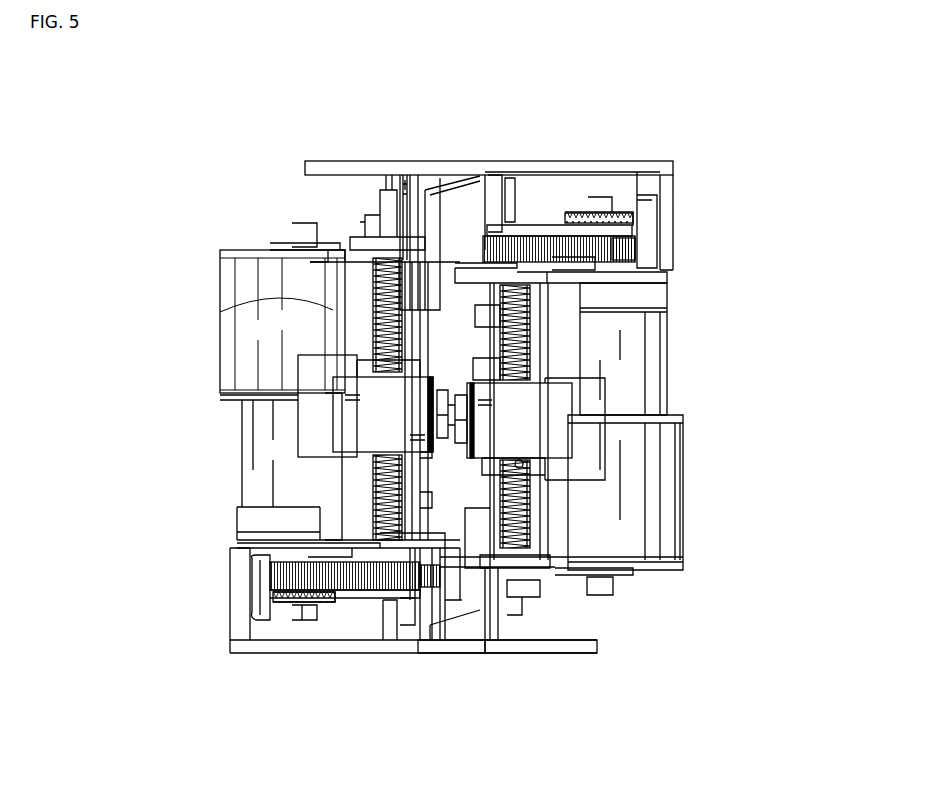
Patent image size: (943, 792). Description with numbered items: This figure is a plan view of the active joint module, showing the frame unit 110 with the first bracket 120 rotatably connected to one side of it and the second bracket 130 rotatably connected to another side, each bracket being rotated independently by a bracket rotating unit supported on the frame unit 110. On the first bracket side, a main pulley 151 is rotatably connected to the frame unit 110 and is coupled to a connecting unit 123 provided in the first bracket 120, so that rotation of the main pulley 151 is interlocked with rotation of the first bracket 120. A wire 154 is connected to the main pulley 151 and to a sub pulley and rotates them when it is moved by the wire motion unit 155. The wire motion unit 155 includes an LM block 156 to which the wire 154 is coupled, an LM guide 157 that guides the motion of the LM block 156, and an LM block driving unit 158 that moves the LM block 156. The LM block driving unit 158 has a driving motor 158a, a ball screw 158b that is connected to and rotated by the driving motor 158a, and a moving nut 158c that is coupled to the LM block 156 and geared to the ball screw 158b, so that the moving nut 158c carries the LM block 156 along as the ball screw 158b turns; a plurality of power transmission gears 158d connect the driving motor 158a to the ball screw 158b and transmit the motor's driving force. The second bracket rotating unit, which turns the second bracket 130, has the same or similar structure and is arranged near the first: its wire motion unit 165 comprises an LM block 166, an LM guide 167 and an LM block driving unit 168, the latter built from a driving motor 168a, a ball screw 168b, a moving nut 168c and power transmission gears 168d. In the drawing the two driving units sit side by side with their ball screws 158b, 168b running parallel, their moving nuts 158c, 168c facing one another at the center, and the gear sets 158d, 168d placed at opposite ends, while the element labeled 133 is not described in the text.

The frame unit 110 is at (462, 603).
The first bracket 120 is at (532, 167).
The connecting unit 123 is at (430, 180).
The second bracket 130 is at (533, 647).
The support block 133 is at (477, 615).
The main pulley 151 is at (407, 182).
The wire 154 is at (392, 190).
The wire motion unit 155 is at (112, 584).
The LM block 156 is at (305, 375).
The LM guide 157 is at (333, 310).
The LM block driving unit 158 is at (164, 580).
The driving motor 158a is at (262, 430).
The ball screw 158b is at (380, 492).
The moving nut 158c is at (387, 370).
The power transmission gear 158d is at (290, 575).
The wire motion unit 165 is at (792, 352).
The LM block 166 is at (557, 443).
The LM guide 167 is at (575, 520).
The LM block driving unit 168 is at (740, 300).
The driving motor 168a is at (650, 437).
The ball screw 168b is at (523, 327).
The moving nut 168c is at (503, 463).
The power transmission gear 168d is at (613, 243).